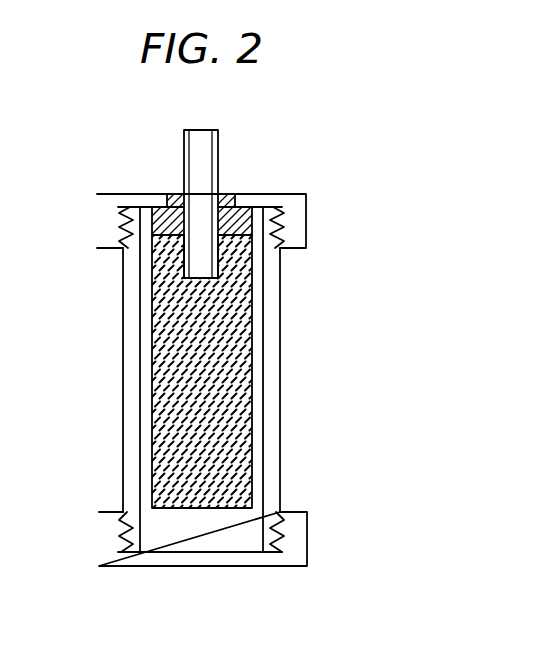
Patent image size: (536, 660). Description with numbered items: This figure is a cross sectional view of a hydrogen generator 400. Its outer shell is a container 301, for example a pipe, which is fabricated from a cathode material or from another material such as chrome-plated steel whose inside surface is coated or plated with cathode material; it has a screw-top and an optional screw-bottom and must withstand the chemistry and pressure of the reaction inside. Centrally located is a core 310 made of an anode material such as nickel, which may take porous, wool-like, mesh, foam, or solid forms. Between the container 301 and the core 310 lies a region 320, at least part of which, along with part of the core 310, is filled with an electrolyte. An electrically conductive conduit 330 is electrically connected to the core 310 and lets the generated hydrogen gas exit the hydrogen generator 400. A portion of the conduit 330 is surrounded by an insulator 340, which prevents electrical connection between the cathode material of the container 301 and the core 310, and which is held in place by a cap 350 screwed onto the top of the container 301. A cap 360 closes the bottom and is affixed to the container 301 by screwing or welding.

The hydrogen generator 400 is at (398, 111).
The container 301 is at (281, 307).
The core 310 is at (240, 370).
The region 320 is at (257, 443).
The conduit 330 is at (220, 142).
The insulator 340 is at (228, 193).
The cap 350 is at (296, 223).
The cap 360 is at (300, 538).